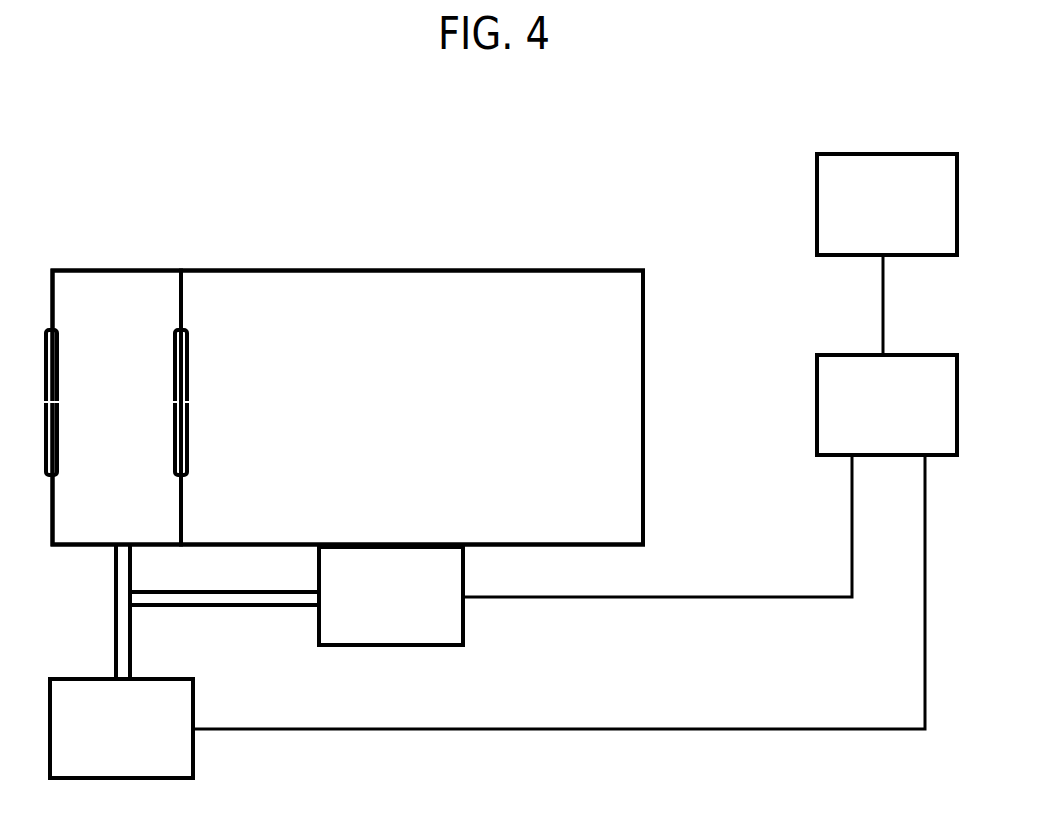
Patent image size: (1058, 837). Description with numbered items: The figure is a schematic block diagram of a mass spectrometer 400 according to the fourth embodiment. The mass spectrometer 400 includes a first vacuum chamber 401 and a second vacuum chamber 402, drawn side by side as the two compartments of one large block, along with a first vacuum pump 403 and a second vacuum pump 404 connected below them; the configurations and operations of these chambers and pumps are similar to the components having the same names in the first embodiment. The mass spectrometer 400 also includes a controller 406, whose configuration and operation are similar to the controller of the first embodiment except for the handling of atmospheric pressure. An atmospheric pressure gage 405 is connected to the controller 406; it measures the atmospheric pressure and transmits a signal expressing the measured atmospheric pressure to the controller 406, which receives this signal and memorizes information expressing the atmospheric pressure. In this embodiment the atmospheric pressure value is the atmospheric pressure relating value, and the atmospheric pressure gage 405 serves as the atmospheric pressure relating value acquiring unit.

The mass spectrometer 400 is at (343, 373).
The first vacuum chamber 401 is at (116, 408).
The second vacuum chamber 402 is at (412, 408).
The first vacuum pump 403 is at (121, 728).
The second vacuum pump 404 is at (391, 596).
The atmospheric pressure gage 405 is at (887, 204).
The controller 406 is at (887, 405).